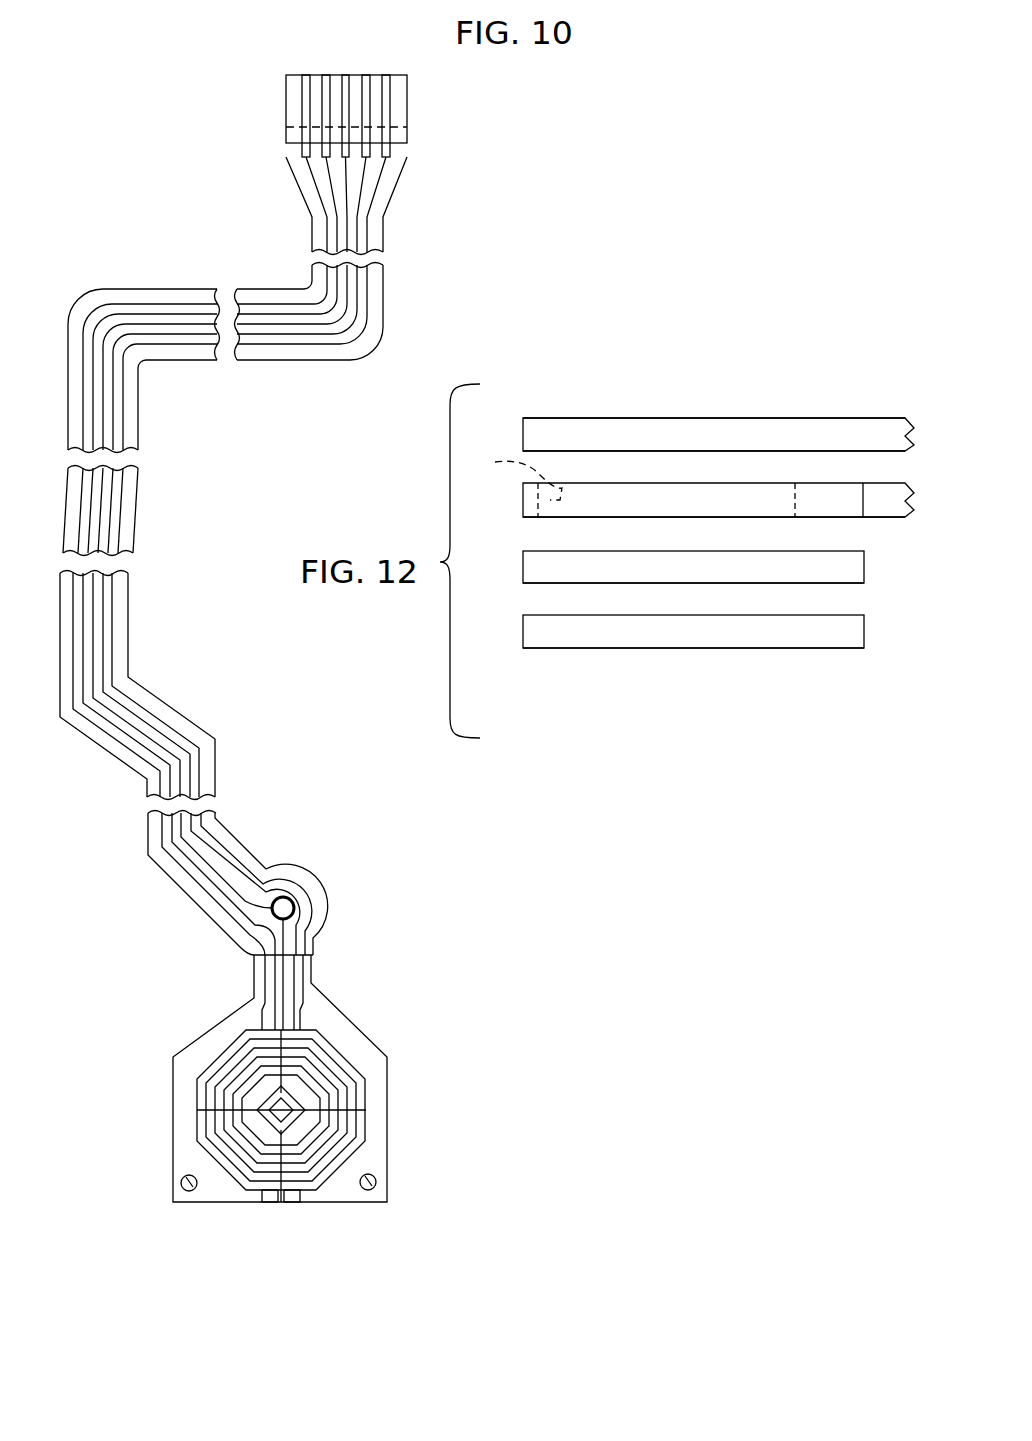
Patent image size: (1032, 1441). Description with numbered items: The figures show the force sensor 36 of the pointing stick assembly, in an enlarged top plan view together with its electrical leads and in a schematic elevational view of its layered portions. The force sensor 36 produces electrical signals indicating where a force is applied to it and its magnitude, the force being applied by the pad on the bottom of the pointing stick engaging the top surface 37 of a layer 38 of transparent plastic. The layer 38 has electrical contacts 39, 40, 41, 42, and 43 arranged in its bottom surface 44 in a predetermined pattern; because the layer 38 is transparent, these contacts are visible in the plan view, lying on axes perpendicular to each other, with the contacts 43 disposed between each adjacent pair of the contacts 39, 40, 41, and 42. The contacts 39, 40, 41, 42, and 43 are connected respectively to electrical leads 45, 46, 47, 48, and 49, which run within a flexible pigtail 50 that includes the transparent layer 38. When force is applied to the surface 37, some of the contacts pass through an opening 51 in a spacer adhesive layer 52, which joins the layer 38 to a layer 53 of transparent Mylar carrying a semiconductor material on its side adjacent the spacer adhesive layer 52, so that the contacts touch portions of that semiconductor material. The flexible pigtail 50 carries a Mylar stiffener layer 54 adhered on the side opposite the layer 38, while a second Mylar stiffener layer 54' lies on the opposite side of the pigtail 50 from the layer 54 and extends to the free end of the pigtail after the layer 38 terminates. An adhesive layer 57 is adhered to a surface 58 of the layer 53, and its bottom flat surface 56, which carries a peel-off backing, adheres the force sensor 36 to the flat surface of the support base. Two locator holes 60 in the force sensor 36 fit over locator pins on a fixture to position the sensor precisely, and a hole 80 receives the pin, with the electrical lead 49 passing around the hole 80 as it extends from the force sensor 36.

In FIG. 10, the force sensor 36 is at (170, 1152).
In FIG. 12, the force sensor 36 is at (692, 517).
In FIG. 12, the top surface 37 is at (718, 416).
In FIG. 12, the layer of transparent plastic 38 is at (638, 413).
In FIG. 10, the electrical contact 39 is at (198, 1120).
In FIG. 10, the electrical contact 40 is at (300, 1005).
In FIG. 10, the electrical contact 41 is at (365, 1123).
In FIG. 10, the electrical contact 42 is at (295, 1203).
In FIG. 10, the electrical contacts 43 is at (260, 1018).
In FIG. 12, the bottom surface 44 is at (790, 452).
In FIG. 10, the electrical lead 45 is at (137, 752).
In FIG. 10, the electrical lead 46 is at (117, 737).
In FIG. 10, the electrical lead 47 is at (247, 880).
In FIG. 10, the electrical lead 48 is at (222, 848).
In FIG. 10, the electrical lead 49 is at (307, 872).
In FIG. 10, the flexible pigtail 50 is at (133, 630).
In FIG. 12, the opening 51 is at (514, 473).
In FIG. 12, the spacer adhesive layer 52 is at (692, 518).
In FIG. 12, the layer of transparent plastic 53 is at (636, 588).
In FIG. 10, the stiffener layer 54 is at (378, 165).
In FIG. 12, the stiffener layer 54 is at (721, 540).
In FIG. 10, the stiffener layer 54' is at (432, 149).
In FIG. 12, the bottom flat surface 56 is at (793, 648).
In FIG. 12, the adhesive layer 57 is at (733, 651).
In FIG. 12, the surface 58 is at (592, 585).
In FIG. 10, the locator holes 60 is at (192, 1192).
In FIG. 10, the hole 80 is at (294, 910).